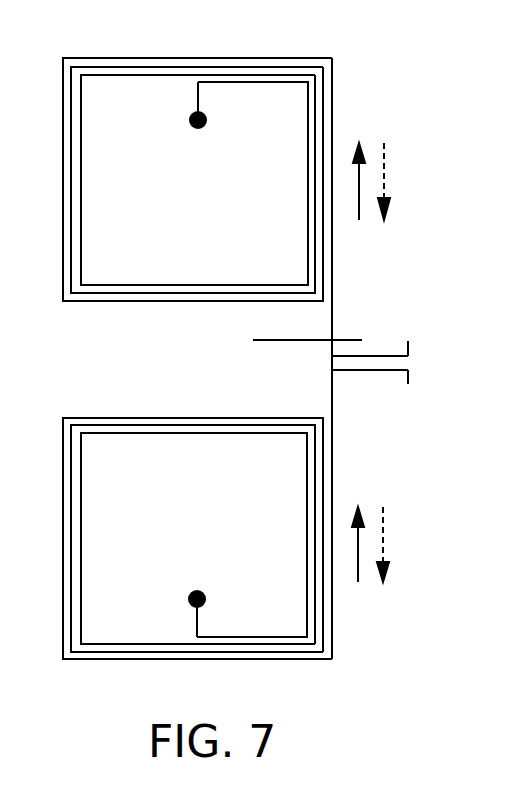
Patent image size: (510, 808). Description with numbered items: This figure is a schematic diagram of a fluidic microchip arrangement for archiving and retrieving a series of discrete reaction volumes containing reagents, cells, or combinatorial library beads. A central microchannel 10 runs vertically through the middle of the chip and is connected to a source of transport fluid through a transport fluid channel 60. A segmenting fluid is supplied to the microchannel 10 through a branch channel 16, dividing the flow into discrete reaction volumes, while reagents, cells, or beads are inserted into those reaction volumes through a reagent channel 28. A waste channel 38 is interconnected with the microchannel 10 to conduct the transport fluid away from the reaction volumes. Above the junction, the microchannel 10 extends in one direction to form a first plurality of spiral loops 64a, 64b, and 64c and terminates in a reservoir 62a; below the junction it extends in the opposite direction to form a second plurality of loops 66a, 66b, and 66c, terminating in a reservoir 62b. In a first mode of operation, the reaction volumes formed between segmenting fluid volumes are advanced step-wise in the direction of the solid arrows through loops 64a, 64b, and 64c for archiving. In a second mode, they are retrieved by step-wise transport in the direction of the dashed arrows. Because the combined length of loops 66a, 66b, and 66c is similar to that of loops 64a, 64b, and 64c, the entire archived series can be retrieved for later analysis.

The microchannel 10 is at (331, 357).
The branch channel 16 is at (383, 356).
The reagent channel 28 is at (263, 338).
The waste channel 38 is at (347, 338).
The transport fluid channel 60 is at (370, 371).
The reservoir 62a is at (194, 129).
The reservoir 62b is at (193, 591).
The loop 64a is at (132, 75).
The loop 64b is at (227, 67).
The loop 64c is at (324, 58).
The loop 66a is at (131, 645).
The loop 66b is at (225, 653).
The loop 66c is at (322, 660).